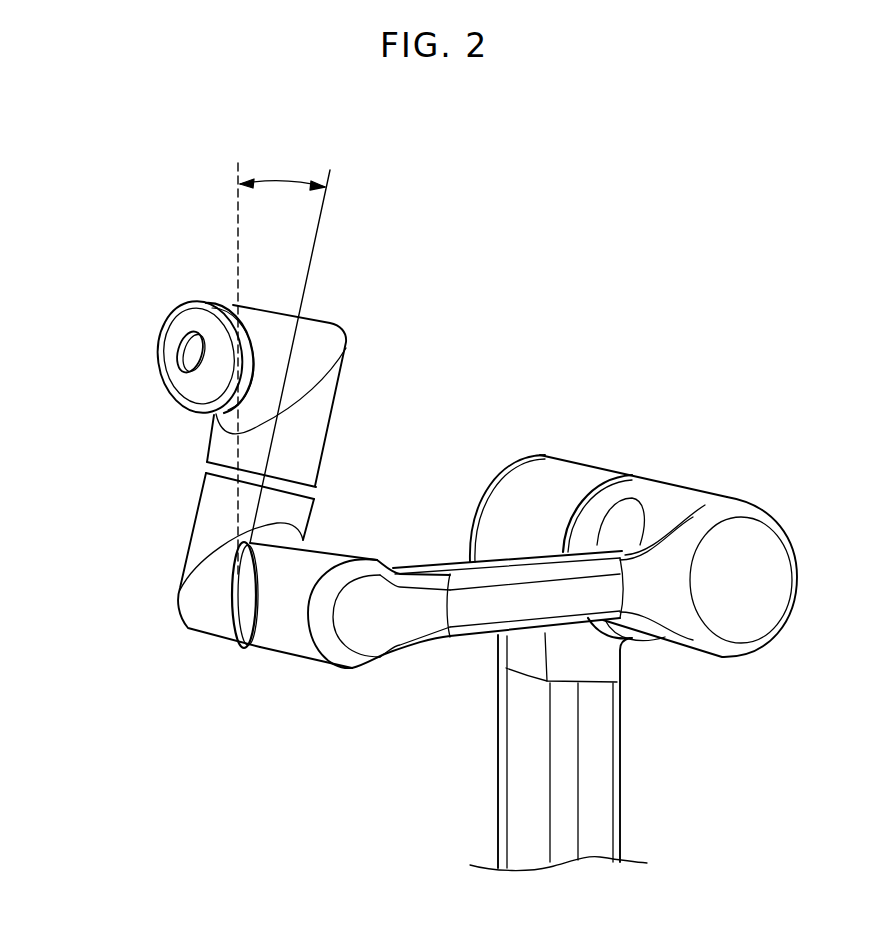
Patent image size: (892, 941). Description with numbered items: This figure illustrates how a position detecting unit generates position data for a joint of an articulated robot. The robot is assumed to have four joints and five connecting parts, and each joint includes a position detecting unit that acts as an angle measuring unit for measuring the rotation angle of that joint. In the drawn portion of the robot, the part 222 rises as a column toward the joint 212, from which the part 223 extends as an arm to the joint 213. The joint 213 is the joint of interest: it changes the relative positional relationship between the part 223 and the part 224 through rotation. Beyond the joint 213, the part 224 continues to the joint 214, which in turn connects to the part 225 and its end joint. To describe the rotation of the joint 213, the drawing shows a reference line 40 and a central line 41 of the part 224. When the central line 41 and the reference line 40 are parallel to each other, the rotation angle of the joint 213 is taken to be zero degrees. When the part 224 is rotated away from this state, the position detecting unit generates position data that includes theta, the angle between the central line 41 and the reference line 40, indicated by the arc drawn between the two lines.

The reference line 40 is at (238, 358).
The central line 41 is at (299, 343).
The angle theta is at (283, 181).
The joint 212 is at (587, 497).
The joint 213 is at (237, 625).
The joint 214 is at (215, 470).
The part 222 is at (602, 762).
The part 223 is at (473, 613).
The part 224 is at (202, 545).
The part 225 is at (306, 452).